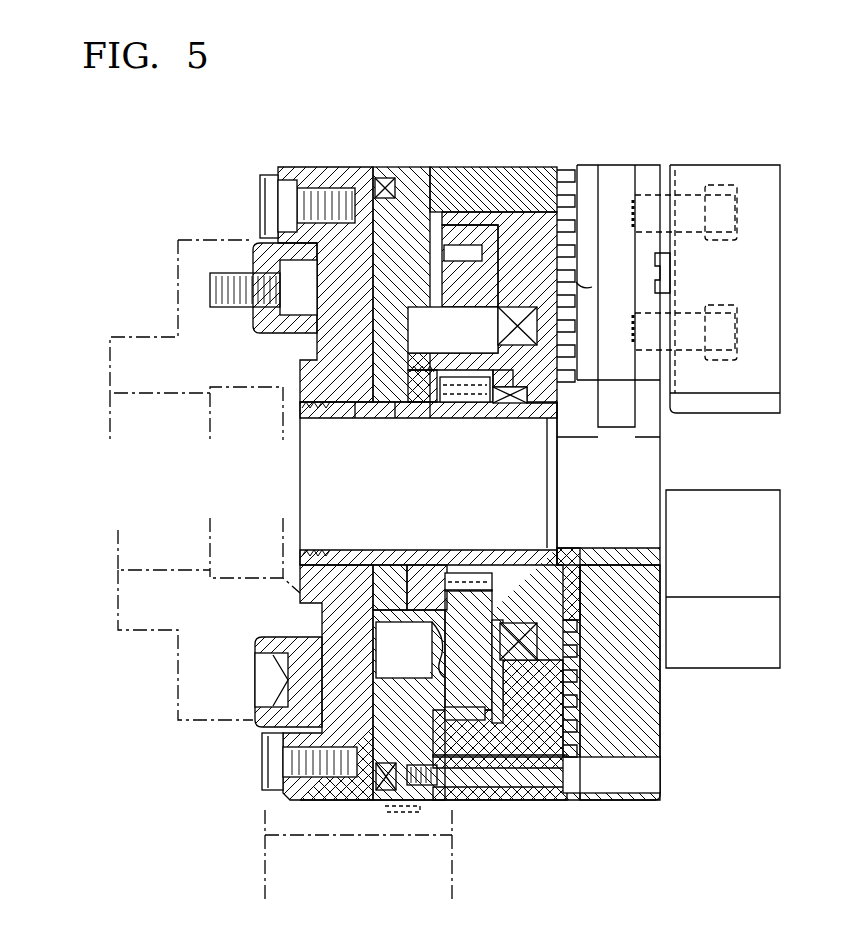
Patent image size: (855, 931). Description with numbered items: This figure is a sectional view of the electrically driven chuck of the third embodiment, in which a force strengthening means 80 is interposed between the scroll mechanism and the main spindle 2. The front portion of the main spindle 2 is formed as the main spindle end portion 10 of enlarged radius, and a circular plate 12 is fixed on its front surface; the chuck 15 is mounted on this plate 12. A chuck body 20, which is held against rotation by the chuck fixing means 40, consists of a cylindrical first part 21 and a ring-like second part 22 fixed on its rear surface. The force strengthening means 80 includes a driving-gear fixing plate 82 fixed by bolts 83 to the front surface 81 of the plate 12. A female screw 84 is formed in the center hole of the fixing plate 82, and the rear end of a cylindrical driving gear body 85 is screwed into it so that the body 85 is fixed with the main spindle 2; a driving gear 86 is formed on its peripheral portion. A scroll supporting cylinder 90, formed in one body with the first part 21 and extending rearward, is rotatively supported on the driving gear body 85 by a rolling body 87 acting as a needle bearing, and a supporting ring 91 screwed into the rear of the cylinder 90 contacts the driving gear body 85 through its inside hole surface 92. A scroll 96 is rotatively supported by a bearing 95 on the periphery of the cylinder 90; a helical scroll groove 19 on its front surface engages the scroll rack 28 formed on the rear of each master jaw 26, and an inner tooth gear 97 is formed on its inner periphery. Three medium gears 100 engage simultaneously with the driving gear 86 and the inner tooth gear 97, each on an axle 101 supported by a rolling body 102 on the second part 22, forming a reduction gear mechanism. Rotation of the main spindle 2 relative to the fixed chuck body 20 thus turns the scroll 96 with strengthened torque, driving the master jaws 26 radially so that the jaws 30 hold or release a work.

The main spindle 2 is at (150, 630).
The main spindle end portion 10 is at (178, 275).
The plate 12 is at (262, 258).
The chuck 15 is at (545, 132).
The scroll groove 19 is at (578, 250).
The chuck body 20 is at (462, 156).
The first part 21 is at (510, 176).
The second part 22 is at (396, 178).
The master jaw 26 is at (650, 185).
The scroll rack 28 is at (604, 286).
The jaw 30 is at (765, 248).
The chuck fixing means 40 is at (453, 858).
The force strengthening means 80 is at (516, 612).
The front surface 81 is at (320, 238).
The driving-gear fixing plate 82 is at (348, 170).
The bolt 83 is at (262, 175).
The female screw 84 is at (330, 418).
The driving gear body 85 is at (382, 418).
The driving gear 86 is at (466, 403).
The rolling body 87 is at (503, 418).
The scroll supporting cylinder 90 is at (453, 330).
The supporting ring 91 is at (430, 570).
The inside hole surface 92 is at (420, 418).
The bearing 95 is at (520, 318).
The scroll 96 is at (556, 694).
The inner tooth gear 97 is at (465, 263).
The medium gear 100 is at (488, 727).
The axle 101 is at (418, 678).
The rolling body 102 is at (378, 620).